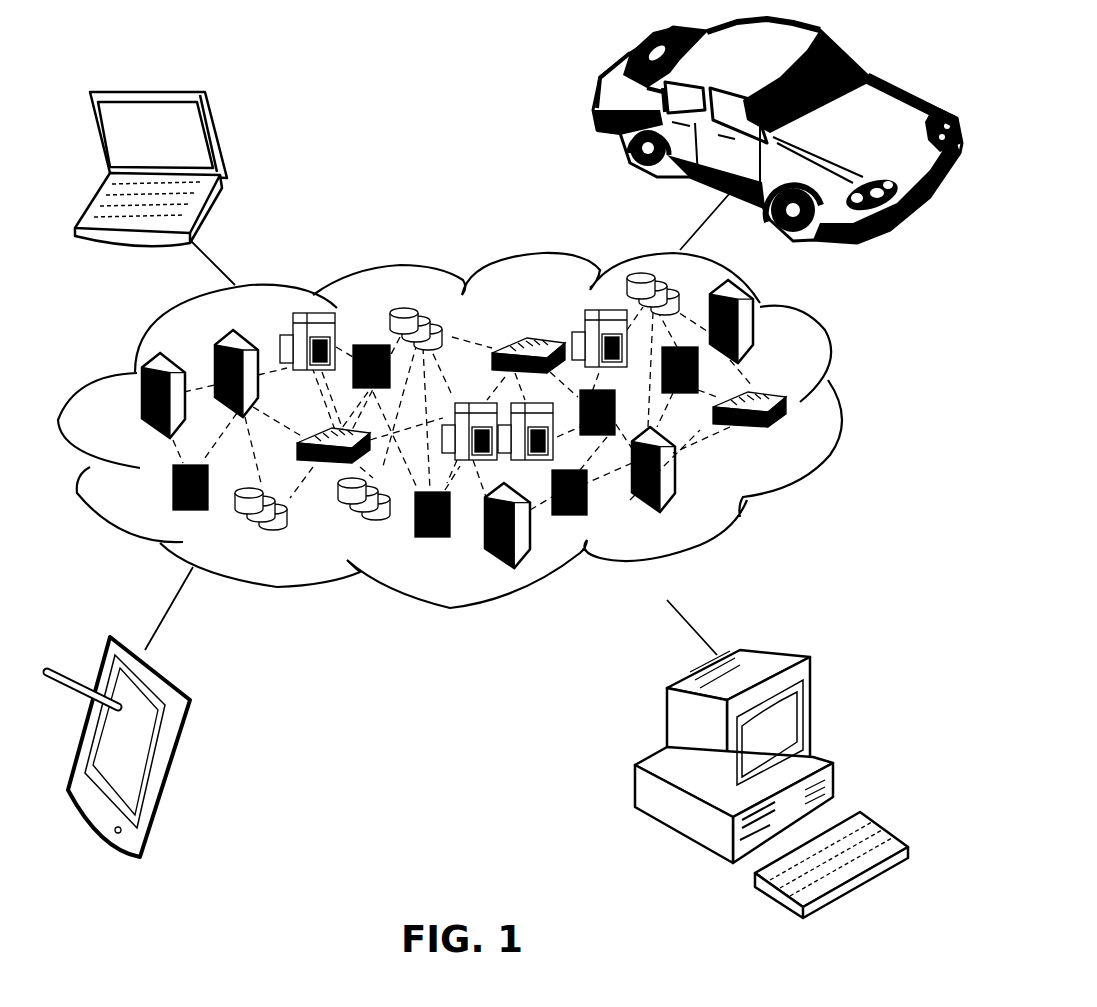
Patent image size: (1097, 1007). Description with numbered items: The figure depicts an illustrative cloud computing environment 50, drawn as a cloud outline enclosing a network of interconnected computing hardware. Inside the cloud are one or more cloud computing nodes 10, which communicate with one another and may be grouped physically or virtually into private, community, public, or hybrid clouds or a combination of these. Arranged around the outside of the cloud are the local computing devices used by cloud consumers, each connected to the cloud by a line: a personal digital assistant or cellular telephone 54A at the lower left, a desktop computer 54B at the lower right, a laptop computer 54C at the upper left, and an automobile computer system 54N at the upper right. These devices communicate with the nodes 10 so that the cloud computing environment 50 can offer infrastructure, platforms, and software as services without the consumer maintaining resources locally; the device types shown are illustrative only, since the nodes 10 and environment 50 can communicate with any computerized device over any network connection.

The cloud computing nodes 10 is at (793, 433).
The cloud computing environment 50 is at (846, 406).
The personal digital assistant (PDA) or cellular telephone 54A is at (182, 737).
The desktop computer 54B is at (780, 648).
The laptop computer 54C is at (228, 133).
The automobile computer system 54N is at (597, 107).